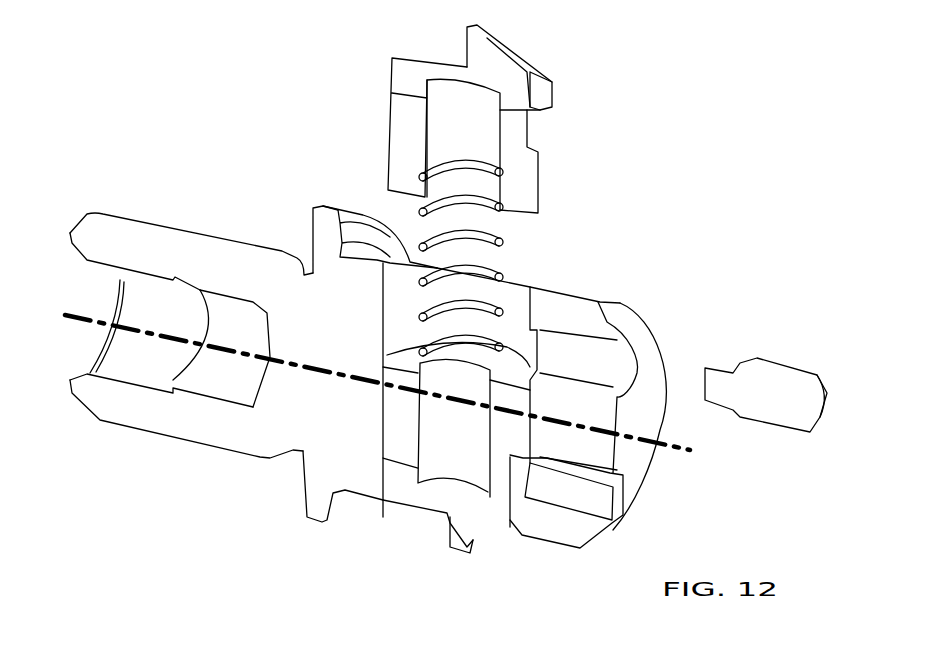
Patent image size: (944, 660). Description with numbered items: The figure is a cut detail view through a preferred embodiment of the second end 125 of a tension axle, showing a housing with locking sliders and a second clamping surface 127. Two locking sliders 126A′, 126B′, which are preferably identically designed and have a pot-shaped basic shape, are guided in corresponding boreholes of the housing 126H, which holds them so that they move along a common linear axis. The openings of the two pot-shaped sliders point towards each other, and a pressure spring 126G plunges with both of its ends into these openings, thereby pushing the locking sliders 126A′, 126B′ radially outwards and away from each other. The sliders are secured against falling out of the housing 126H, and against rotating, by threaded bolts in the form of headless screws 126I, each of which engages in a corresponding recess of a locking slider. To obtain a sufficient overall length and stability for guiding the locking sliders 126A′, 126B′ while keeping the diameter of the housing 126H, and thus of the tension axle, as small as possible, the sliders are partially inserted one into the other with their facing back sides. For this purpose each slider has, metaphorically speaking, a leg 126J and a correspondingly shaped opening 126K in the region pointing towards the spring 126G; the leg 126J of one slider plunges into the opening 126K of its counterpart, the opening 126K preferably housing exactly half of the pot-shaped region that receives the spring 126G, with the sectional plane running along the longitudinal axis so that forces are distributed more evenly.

The second end 125 is at (248, 98).
The housing 126H is at (222, 256).
The leg 126J is at (400, 140).
The opening 126K is at (472, 135).
The second clamping surface 127 is at (467, 50).
The locking slider 126B′ is at (528, 64).
The spring 126G is at (503, 243).
The locking slider 126A′ is at (475, 533).
The headless screw 126I is at (620, 498).